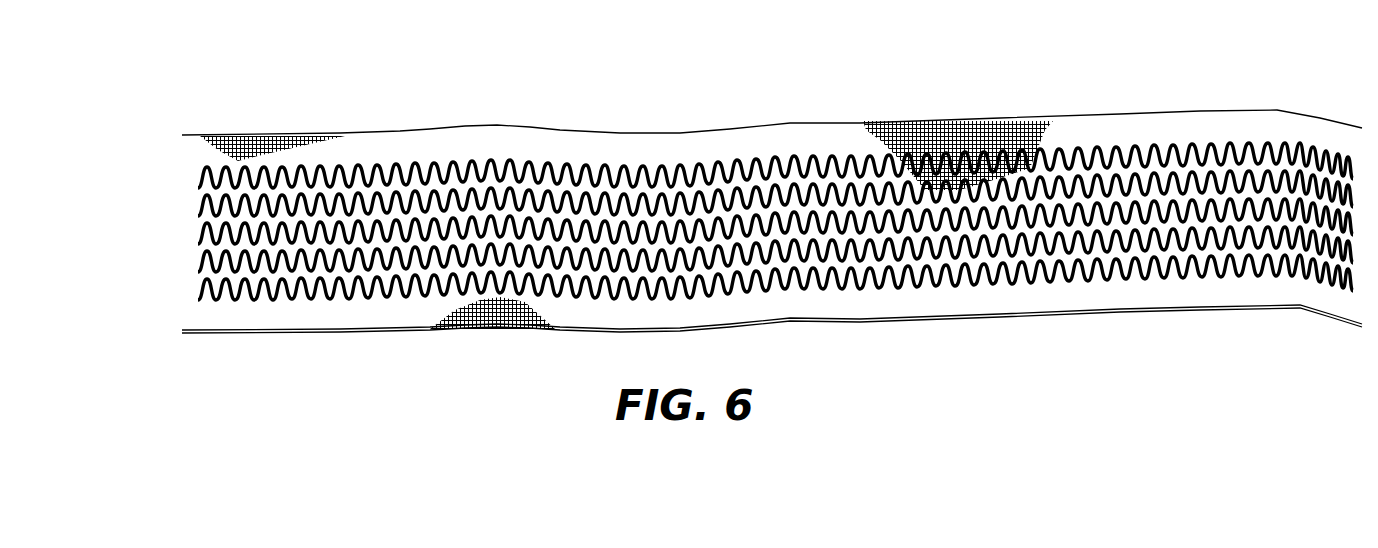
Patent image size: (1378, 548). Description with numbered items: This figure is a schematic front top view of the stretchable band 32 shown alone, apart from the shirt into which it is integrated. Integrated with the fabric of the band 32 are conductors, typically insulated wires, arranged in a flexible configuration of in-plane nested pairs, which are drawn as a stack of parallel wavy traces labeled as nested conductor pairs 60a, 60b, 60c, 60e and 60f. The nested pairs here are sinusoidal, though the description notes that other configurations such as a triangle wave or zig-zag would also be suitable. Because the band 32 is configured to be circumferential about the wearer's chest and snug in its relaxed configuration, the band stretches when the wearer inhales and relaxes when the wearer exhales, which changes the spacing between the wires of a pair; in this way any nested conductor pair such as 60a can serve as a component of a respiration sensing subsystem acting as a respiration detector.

The stretchable band 32 is at (637, 151).
The nested conductor pair 60a is at (198, 180).
The nested conductor pair 60b is at (198, 210).
The nested conductor pair 60c is at (198, 239).
The nested conductor pair 60e is at (198, 268).
The nested conductor pair 60f is at (198, 299).